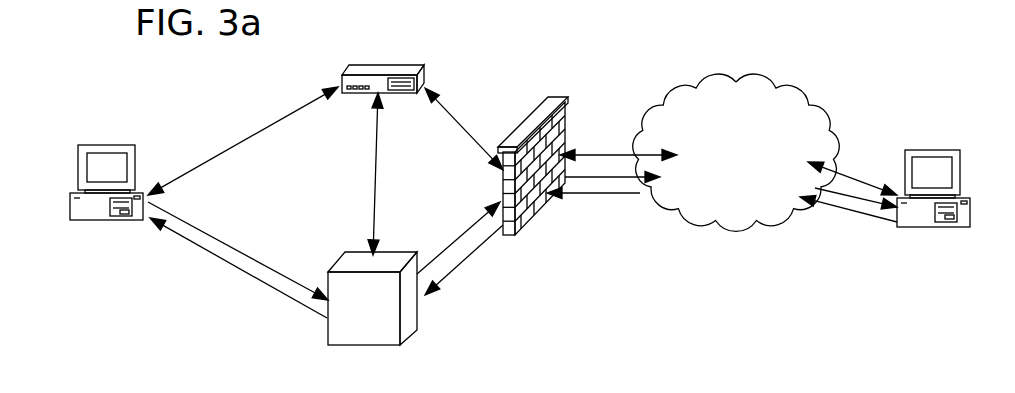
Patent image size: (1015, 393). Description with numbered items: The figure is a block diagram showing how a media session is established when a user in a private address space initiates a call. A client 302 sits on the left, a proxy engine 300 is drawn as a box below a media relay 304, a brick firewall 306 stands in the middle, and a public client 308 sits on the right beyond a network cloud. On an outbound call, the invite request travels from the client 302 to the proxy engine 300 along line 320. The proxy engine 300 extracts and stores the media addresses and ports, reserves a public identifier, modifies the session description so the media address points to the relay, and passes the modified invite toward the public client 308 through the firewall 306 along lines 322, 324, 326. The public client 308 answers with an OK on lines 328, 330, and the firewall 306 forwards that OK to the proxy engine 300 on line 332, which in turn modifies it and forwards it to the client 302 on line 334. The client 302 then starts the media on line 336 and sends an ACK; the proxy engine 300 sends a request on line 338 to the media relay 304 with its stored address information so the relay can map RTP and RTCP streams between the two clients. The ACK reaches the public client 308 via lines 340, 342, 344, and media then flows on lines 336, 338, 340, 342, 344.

The proxy engine 300 is at (368, 328).
The client 302 is at (108, 145).
The media relay 304 is at (378, 72).
The firewall 306 is at (553, 105).
The public client 308 is at (922, 150).
The line 320 is at (283, 259).
The line 322 is at (462, 230).
The line 324 is at (620, 182).
The line 326 is at (865, 203).
The line 328 is at (822, 205).
The line 330 is at (572, 198).
The line 332 is at (470, 256).
The line 334 is at (244, 276).
The line 336 is at (281, 118).
The line 338 is at (373, 128).
The line 340 is at (463, 128).
The line 342 is at (613, 150).
The line 344 is at (860, 174).